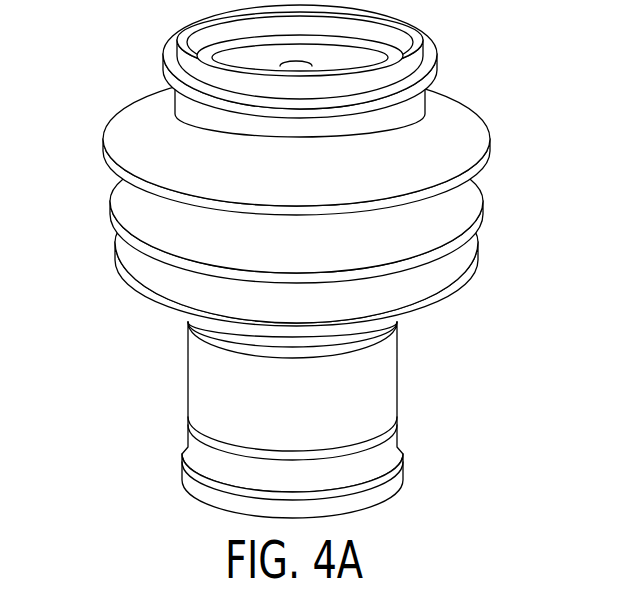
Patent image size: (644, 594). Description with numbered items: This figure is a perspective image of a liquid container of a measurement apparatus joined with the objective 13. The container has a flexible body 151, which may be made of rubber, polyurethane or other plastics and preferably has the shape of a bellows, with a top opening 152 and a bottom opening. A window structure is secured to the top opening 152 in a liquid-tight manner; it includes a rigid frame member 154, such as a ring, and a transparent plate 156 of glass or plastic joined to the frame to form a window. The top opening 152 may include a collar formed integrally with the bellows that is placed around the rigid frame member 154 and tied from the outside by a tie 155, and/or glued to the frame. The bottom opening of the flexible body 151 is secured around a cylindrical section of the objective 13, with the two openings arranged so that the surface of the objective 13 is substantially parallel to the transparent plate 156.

The objective 13 is at (228, 388).
The flexible body 151 is at (178, 220).
The top opening 152 is at (170, 70).
The rigid frame member 154 is at (177, 45).
The tie 155 is at (177, 93).
The transparent plate 156 is at (263, 57).